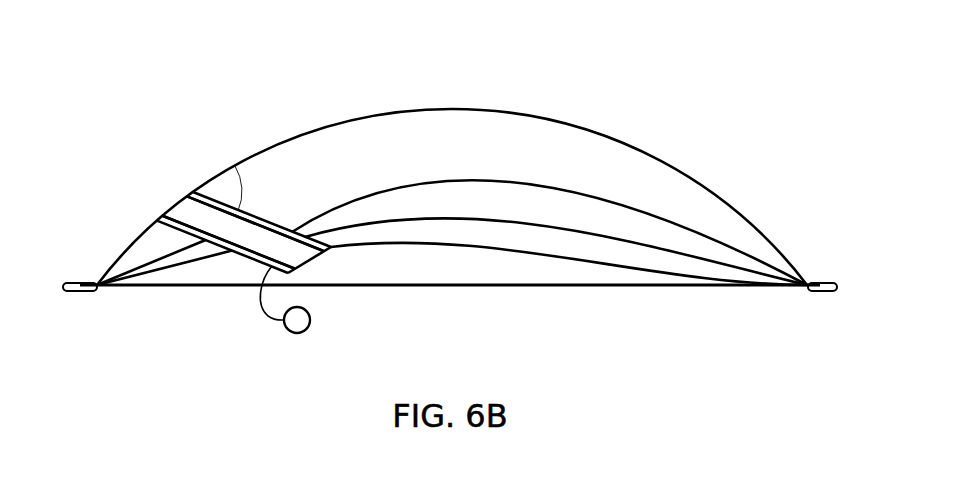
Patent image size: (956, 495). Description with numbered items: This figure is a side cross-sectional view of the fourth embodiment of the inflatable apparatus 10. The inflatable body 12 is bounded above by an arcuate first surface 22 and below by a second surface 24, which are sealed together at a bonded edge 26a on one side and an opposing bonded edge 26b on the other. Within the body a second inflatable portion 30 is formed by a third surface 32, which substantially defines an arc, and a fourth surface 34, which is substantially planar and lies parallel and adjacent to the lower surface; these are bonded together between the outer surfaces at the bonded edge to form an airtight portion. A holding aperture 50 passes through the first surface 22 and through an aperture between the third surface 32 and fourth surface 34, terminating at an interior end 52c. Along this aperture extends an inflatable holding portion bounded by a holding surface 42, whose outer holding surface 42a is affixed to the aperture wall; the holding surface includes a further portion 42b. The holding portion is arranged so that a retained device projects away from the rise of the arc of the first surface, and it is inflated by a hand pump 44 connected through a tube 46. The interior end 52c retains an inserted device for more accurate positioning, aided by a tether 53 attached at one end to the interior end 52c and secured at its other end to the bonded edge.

The inflatable apparatus 10 is at (628, 72).
The inflatable body 12 is at (381, 128).
The first surface 22 is at (452, 107).
The second surface 24 is at (472, 287).
The bonded edge 26a is at (80, 284).
The bonded edge 26b is at (818, 283).
The second inflatable portion 30 is at (608, 206).
The third surface 32 is at (496, 180).
The fourth surface 34 is at (545, 228).
The holding surface 42 is at (190, 192).
The outer holding surface 42a is at (248, 216).
The upper band of bar 42b is at (266, 212).
The hand pump 44 is at (312, 323).
The tube 46 is at (273, 322).
The holding aperture 50 is at (182, 208).
The interior end 52c is at (313, 261).
The tether 53 is at (403, 250).